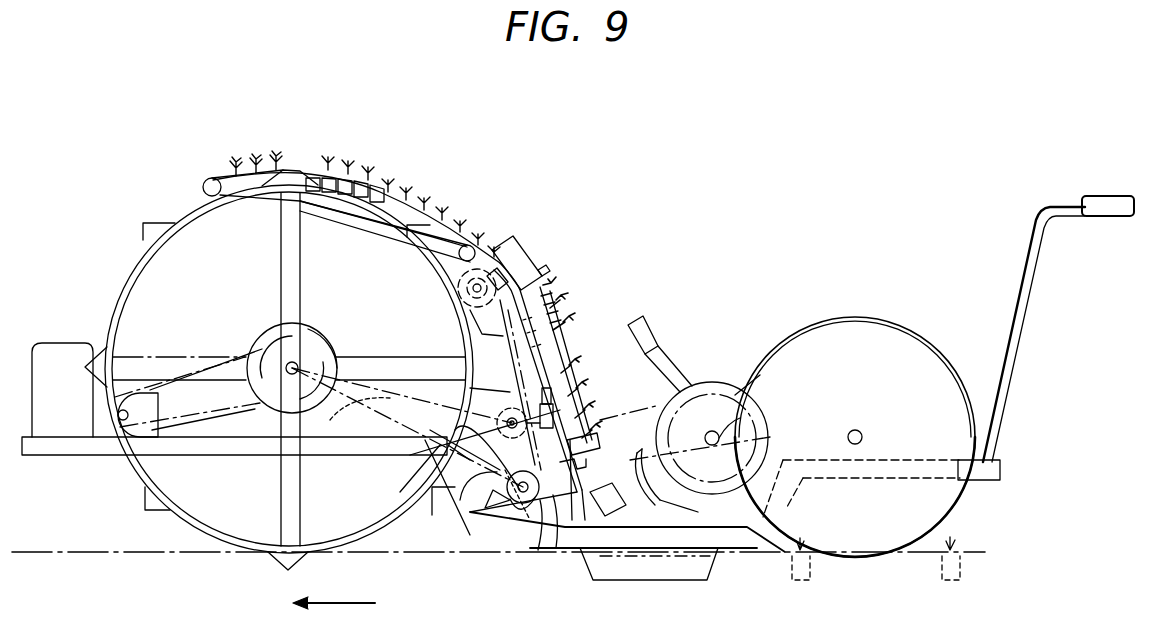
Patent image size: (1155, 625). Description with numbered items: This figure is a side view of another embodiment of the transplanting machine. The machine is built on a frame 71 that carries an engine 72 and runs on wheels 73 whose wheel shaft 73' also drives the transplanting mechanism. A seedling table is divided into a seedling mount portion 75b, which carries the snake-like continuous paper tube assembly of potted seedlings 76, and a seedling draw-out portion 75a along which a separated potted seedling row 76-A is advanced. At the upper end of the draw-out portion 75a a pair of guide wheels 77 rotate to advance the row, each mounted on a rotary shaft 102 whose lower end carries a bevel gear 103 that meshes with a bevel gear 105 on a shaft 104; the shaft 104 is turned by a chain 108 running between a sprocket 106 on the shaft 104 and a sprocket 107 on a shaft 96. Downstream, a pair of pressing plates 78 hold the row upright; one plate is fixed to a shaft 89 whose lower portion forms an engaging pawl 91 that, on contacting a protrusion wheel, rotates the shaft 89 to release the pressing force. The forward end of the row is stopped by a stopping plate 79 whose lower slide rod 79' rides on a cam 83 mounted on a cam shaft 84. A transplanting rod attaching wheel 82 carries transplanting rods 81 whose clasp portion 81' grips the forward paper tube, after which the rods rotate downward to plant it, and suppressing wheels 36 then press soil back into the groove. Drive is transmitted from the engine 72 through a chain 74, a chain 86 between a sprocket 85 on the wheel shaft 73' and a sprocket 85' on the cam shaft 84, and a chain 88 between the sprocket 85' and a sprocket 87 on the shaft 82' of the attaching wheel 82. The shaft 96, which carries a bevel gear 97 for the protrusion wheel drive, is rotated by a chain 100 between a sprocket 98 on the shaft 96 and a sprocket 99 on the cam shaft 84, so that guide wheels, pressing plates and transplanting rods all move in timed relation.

The suppressing wheel 36 is at (944, 362).
The frame 71 is at (74, 456).
The engine 72 is at (52, 343).
The wheel 73 is at (272, 369).
The wheel shaft 73' is at (284, 352).
The chain 74 is at (220, 408).
The seedling draw-out portion 75a is at (564, 300).
The seedling mount portion 75b is at (210, 178).
The continuous paper tube assembly of potted seedlings 76 is at (347, 176).
The potted seedling row 76-A is at (570, 322).
The guide wheel 77 is at (524, 256).
The pressing plate 78 is at (566, 350).
The stopping plate 79 is at (644, 486).
The slide rod 79' is at (569, 537).
The transplanting rod 81 is at (679, 366).
The clasp portion 81' is at (674, 333).
The transplanting rod attaching wheel 82 is at (685, 391).
The shaft of transplanting rod attaching wheel 82' is at (754, 407).
The cam 83 is at (496, 515).
The cam shaft 84 is at (520, 506).
The sprocket 85 is at (326, 331).
The sprocket 85' is at (506, 536).
The chain 86 is at (332, 416).
The sprocket 87 is at (732, 390).
The chain 88 is at (590, 422).
The shaft 89 is at (582, 388).
The engaging pawl 91 is at (503, 398).
The shaft 96 is at (462, 420).
The bevel gear 97 is at (440, 466).
The sprocket 98 is at (452, 460).
The sprocket 99 is at (540, 552).
The chain 100 is at (486, 470).
The rotary shaft 102 is at (571, 270).
The bevel gear 103 is at (458, 258).
The shaft 104 is at (486, 279).
The bevel gear 105 is at (466, 294).
The sprocket 106 is at (472, 308).
The sprocket 107 is at (468, 390).
The chain 108 is at (476, 330).